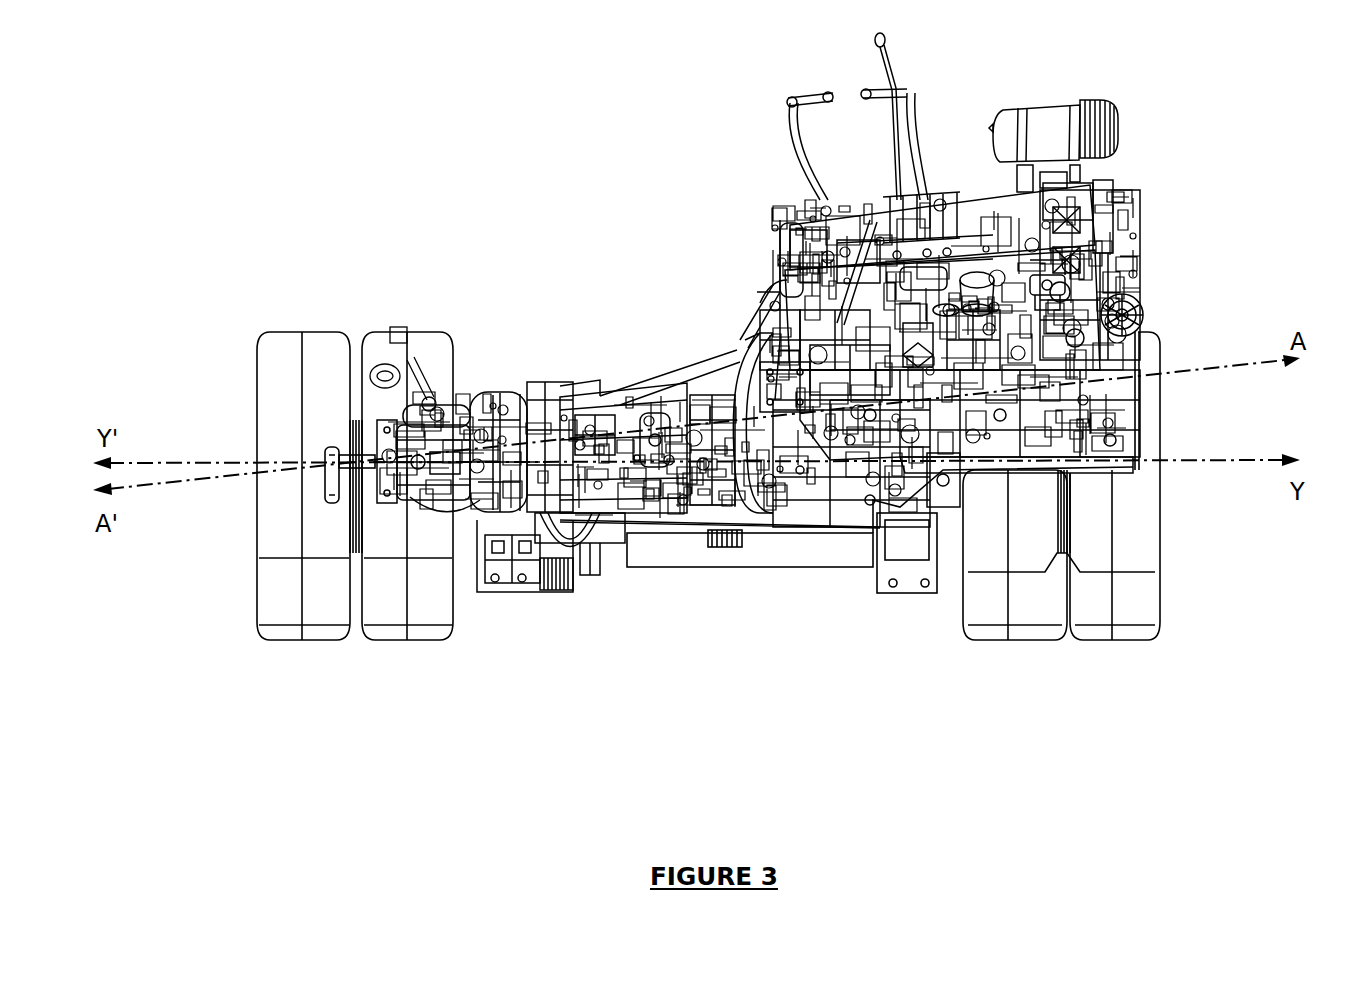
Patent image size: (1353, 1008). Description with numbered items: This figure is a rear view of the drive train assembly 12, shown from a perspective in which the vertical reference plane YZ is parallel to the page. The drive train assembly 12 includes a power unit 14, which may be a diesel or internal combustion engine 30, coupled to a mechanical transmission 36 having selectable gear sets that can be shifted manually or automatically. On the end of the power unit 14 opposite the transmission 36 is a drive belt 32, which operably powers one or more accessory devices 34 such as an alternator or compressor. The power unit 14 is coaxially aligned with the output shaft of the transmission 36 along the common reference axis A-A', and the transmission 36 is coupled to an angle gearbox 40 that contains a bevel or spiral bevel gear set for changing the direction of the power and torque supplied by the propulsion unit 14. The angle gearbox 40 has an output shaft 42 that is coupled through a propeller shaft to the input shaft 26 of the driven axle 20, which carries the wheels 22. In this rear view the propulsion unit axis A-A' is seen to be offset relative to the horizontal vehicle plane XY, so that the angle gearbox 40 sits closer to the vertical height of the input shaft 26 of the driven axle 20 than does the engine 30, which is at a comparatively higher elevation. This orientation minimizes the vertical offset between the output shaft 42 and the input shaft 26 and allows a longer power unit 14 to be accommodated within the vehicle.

The drive train assembly 12 is at (692, 300).
The power unit 14 is at (1142, 215).
The driven axle 20 is at (737, 568).
The wheels 22 is at (427, 567).
The input shaft 26 is at (562, 560).
The engine 30 is at (905, 445).
The drive belt 32 is at (1057, 282).
The accessory devices 34 is at (1052, 134).
The transmission 36 is at (597, 432).
The angle gearbox 40 is at (440, 428).
The output shaft 42 is at (513, 590).